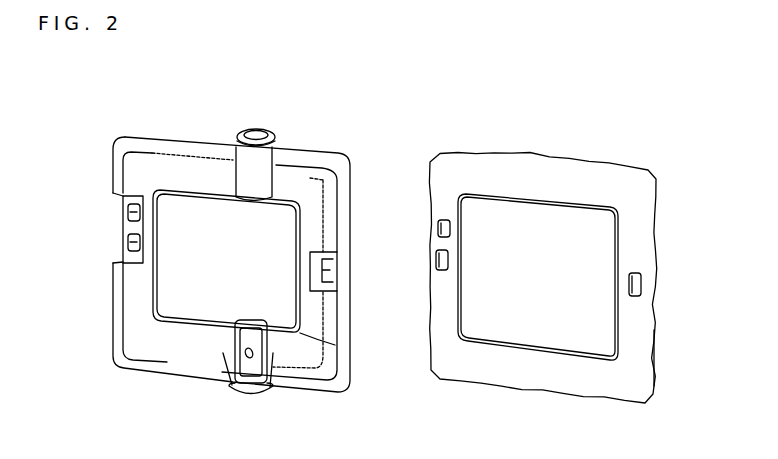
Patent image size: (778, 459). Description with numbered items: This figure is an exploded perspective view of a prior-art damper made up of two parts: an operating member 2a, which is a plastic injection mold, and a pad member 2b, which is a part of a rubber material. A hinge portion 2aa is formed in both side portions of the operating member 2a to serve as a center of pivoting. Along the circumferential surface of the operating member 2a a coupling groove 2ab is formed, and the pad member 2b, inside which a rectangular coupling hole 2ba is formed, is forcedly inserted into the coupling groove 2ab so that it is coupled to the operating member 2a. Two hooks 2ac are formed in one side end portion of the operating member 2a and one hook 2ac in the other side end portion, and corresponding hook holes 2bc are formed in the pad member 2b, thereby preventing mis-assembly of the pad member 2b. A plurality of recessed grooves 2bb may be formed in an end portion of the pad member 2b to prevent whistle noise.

The operating member 2a is at (127, 372).
The hinge portion 2aa is at (246, 394).
The coupling groove 2ab is at (338, 358).
The hook 2ac is at (123, 247).
The pad member 2b is at (563, 144).
The coupling hole 2ba is at (572, 340).
The recessed groove 2bb is at (654, 383).
The hook hole 2bc is at (437, 252).